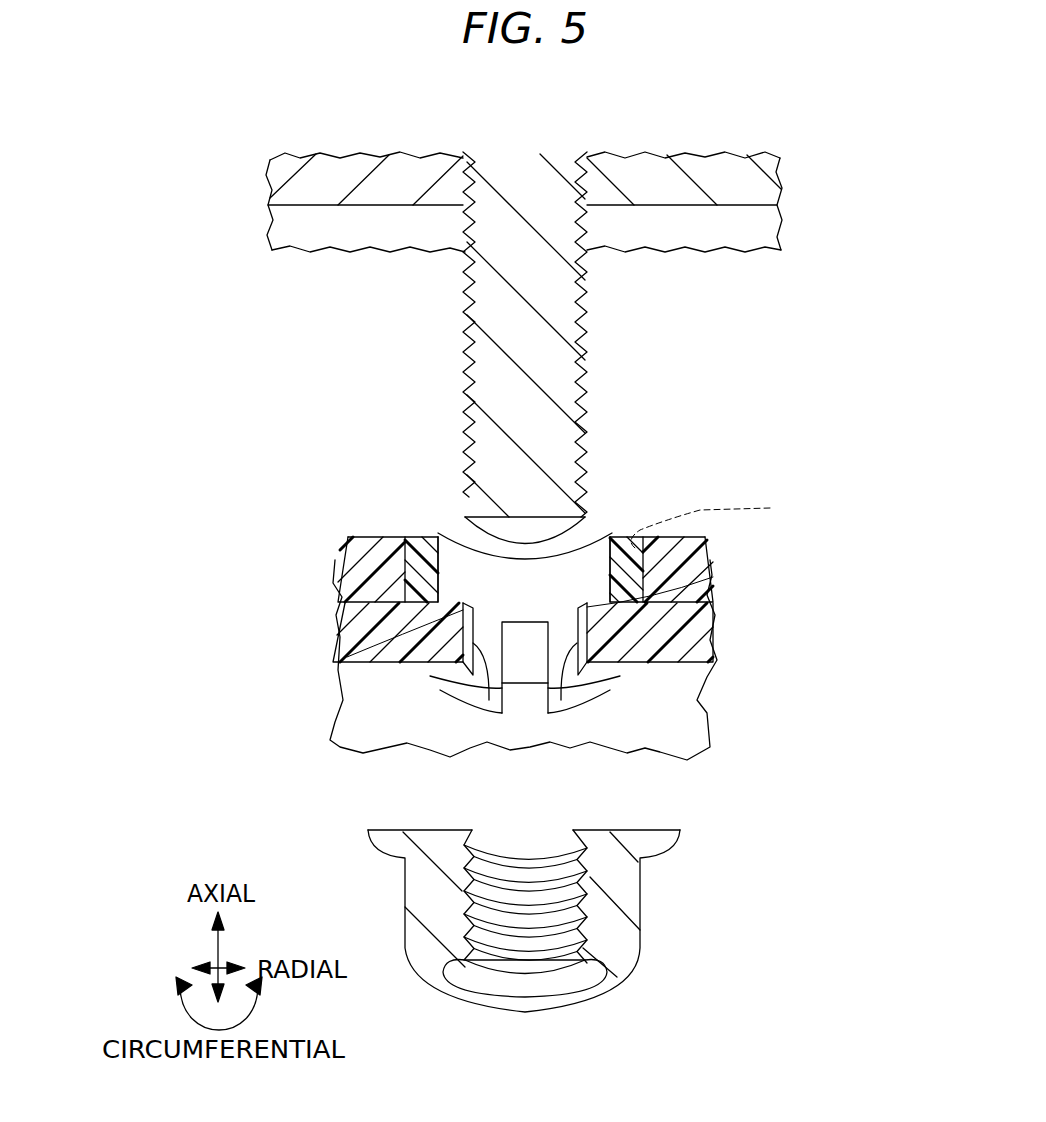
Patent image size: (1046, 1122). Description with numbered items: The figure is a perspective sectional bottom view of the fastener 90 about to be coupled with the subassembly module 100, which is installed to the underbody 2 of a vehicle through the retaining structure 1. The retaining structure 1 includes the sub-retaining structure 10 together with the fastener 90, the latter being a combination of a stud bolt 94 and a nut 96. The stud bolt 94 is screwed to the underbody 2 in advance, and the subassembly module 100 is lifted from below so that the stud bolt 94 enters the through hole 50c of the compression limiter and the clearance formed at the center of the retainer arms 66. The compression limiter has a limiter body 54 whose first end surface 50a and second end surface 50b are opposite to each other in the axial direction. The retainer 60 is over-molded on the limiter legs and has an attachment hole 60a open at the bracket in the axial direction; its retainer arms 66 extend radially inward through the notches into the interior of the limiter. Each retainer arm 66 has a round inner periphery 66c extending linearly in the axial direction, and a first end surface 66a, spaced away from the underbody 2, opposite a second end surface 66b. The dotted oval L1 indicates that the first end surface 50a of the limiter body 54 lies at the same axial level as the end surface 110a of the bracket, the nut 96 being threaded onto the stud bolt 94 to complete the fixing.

The retaining structure 1 is at (885, 314).
The underbody 2 is at (780, 235).
The sub-retaining structure 10 is at (804, 629).
The first end surface 50a is at (420, 537).
The second end surface 50b is at (455, 673).
The through hole 50c is at (478, 577).
The limiter body 54 is at (413, 547).
The retainer 60 is at (783, 662).
The attachment hole 60a is at (410, 590).
The retainer arm 66 is at (400, 672).
The first end surface 66a is at (450, 600).
The second end surface 66b is at (425, 676).
The inner periphery 66c is at (478, 692).
The fastener 90 is at (760, 309).
The stud bolt 94 is at (587, 338).
The nut 96 is at (640, 920).
The subassembly module 100 is at (290, 508).
The end surface 110a is at (366, 537).
The dotted oval L1 is at (718, 525).